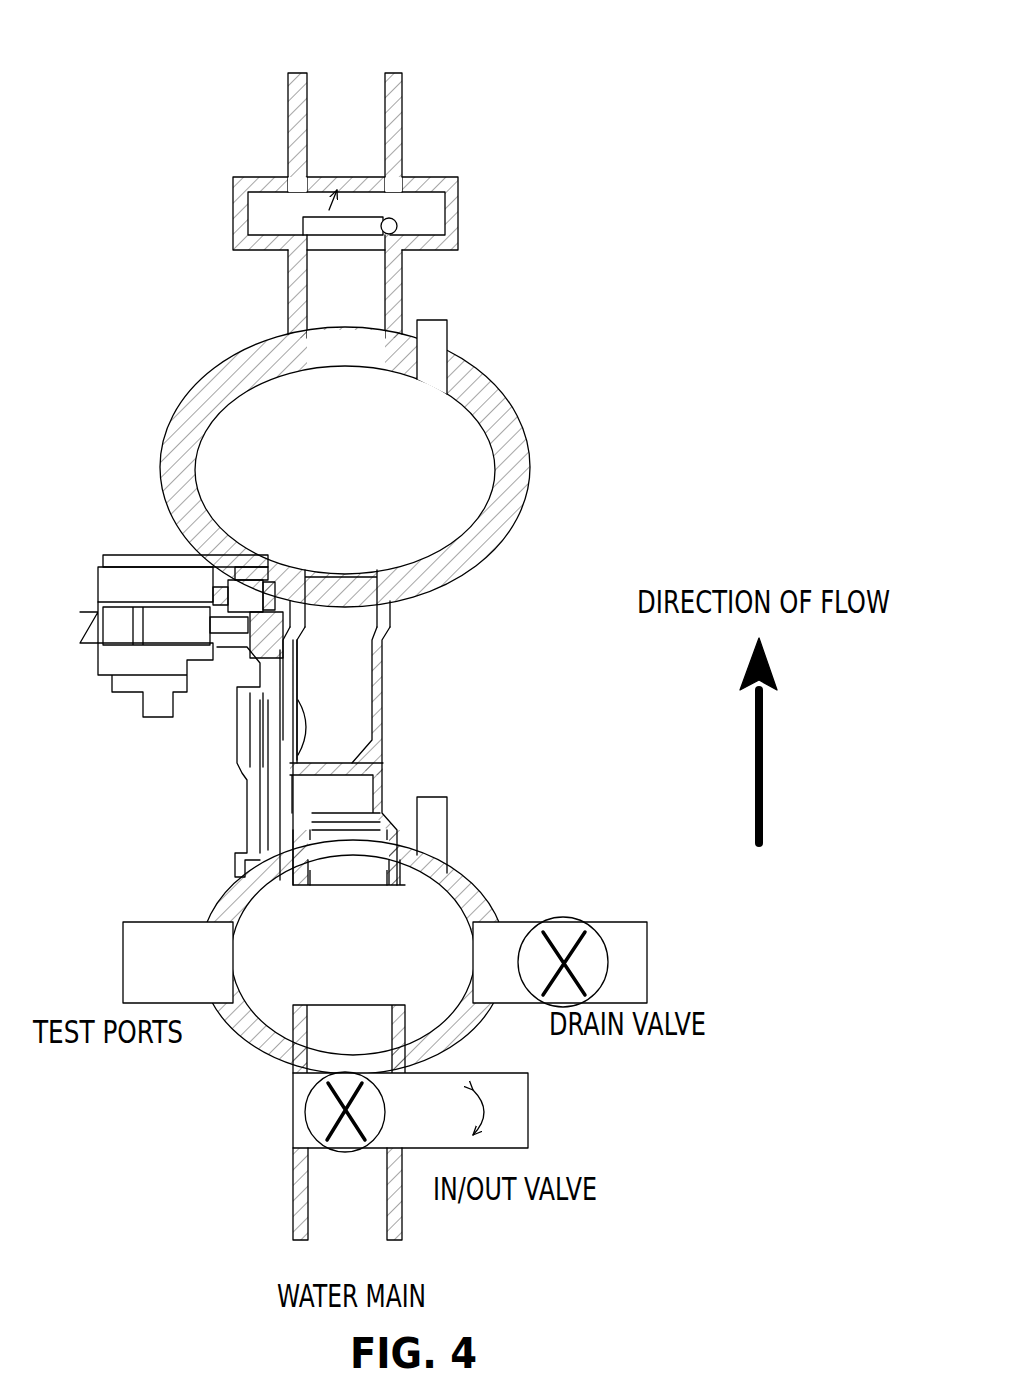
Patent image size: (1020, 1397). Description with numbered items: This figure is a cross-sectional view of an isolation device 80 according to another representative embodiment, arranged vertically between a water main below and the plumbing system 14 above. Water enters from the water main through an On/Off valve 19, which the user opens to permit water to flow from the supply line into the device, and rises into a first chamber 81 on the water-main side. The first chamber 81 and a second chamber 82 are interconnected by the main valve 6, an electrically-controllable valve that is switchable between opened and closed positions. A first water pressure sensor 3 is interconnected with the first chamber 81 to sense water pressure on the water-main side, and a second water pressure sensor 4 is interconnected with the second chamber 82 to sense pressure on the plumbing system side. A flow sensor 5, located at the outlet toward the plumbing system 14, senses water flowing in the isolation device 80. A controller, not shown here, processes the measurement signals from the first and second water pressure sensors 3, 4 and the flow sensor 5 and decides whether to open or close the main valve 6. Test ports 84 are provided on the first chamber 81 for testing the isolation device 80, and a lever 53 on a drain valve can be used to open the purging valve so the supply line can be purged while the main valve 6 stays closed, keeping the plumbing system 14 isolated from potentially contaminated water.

The isolation device 80 is at (122, 114).
The plumbing system 14 is at (341, 112).
The flow sensor 5 is at (357, 223).
The second water pressure sensor 4 is at (432, 330).
The second chamber 82 is at (362, 474).
The main valve 6 is at (385, 693).
The first water pressure sensor 3 is at (437, 803).
The test ports 84 is at (172, 920).
The lever 53 is at (566, 938).
The first chamber 81 is at (365, 959).
The On/Off valve 19 is at (400, 1065).